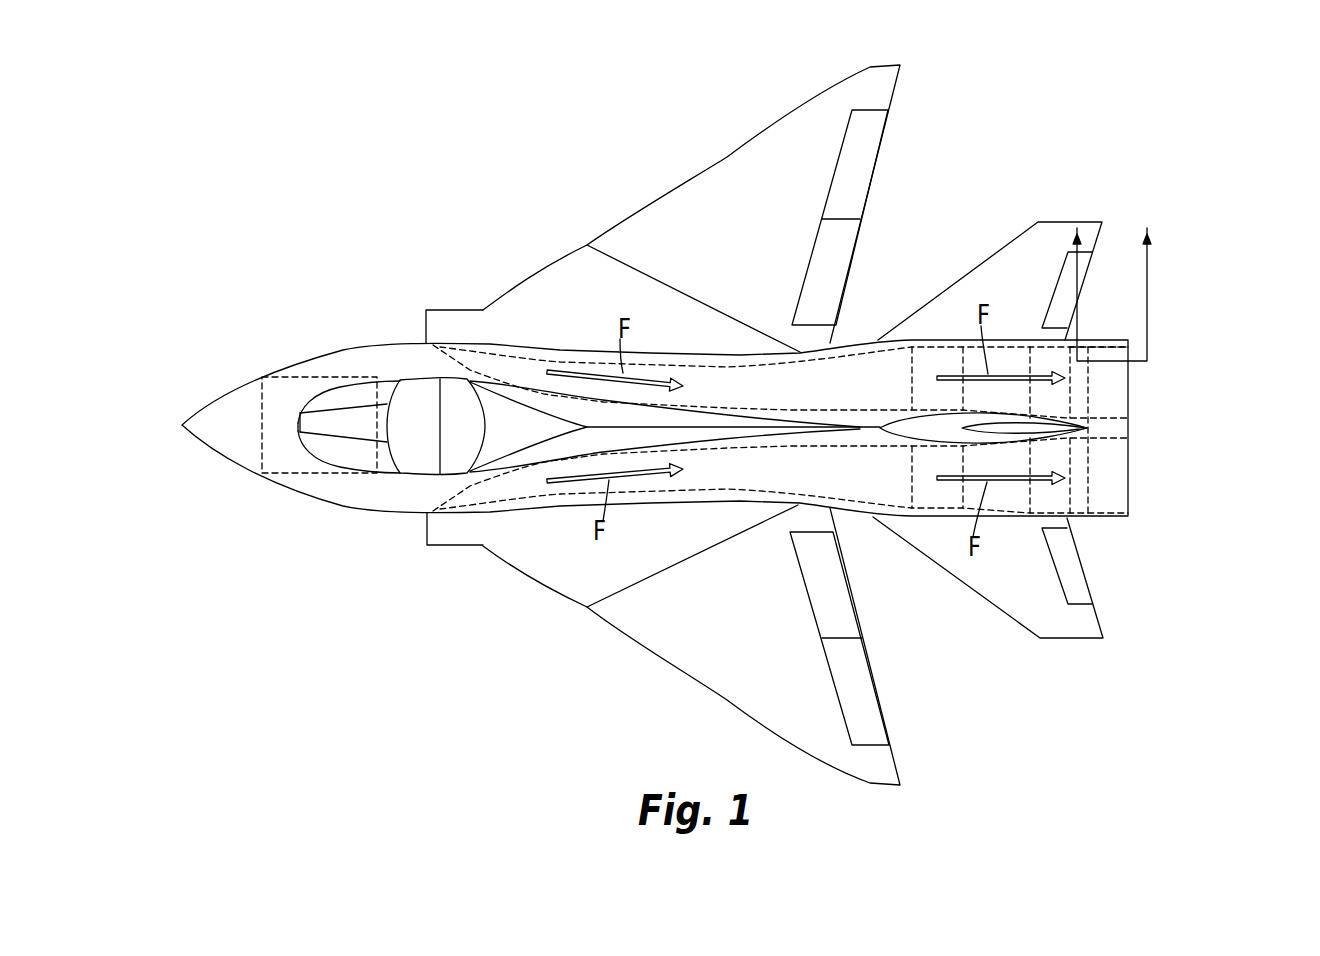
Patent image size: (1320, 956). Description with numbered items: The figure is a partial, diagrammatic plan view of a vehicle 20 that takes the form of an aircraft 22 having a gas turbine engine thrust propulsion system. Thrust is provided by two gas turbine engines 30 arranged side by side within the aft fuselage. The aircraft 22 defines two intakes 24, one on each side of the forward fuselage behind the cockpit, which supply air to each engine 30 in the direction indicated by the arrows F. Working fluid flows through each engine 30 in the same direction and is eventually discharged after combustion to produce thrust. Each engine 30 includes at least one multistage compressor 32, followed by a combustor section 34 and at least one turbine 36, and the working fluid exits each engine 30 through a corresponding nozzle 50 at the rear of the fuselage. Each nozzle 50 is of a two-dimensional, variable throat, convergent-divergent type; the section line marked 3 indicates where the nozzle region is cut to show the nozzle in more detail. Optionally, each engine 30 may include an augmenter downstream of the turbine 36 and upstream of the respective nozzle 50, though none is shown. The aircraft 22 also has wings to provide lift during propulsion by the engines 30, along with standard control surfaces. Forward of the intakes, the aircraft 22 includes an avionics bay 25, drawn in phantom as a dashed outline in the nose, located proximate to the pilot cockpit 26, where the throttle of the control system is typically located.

The vehicle 20 is at (1156, 141).
The aircraft 22 is at (909, 64).
The intake 24 is at (426, 318).
The avionics bay 25 is at (300, 474).
The pilot cockpit 26 is at (403, 379).
The gas turbine engine 30 is at (912, 347).
The multistage compressor 32 is at (933, 347).
The combustor section 34 is at (1000, 347).
The turbine 36 is at (1048, 347).
The nozzle 50 is at (1128, 391).
The section line 3- 3 is at (1112, 277).